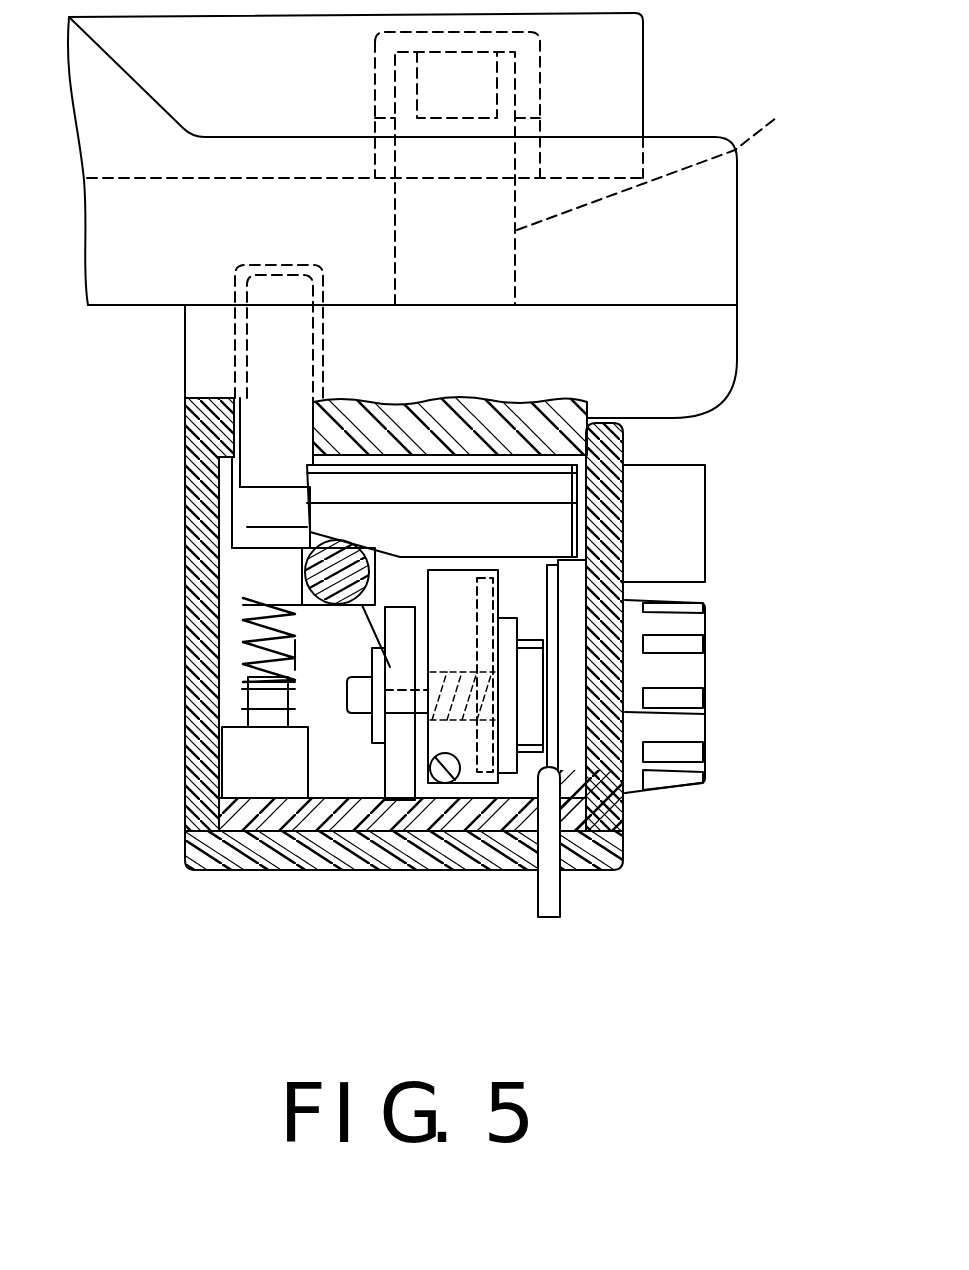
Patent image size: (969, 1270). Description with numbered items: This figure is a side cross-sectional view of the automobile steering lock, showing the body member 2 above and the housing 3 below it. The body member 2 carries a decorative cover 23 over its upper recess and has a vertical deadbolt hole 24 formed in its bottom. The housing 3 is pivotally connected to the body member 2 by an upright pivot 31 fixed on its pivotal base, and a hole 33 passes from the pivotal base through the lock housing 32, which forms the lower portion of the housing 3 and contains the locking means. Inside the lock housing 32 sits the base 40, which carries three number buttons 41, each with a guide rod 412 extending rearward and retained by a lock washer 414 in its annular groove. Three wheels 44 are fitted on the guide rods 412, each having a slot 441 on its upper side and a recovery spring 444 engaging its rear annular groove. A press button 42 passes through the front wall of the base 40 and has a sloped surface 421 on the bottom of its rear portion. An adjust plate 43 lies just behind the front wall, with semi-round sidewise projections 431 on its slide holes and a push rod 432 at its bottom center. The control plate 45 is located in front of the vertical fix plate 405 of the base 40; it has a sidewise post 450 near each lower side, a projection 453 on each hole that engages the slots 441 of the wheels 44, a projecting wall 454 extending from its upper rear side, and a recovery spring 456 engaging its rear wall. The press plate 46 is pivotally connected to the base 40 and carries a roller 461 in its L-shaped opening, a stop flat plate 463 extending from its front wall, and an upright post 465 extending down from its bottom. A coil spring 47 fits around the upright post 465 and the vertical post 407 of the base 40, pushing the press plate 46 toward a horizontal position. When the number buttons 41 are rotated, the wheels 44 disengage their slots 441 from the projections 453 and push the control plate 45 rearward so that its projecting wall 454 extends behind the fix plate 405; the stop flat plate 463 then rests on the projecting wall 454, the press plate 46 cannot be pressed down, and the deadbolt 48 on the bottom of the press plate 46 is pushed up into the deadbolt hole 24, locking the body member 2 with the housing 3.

The body member 2 is at (710, 208).
The housing 3 is at (708, 348).
The decorative cover 23 is at (628, 55).
The deadbolt hole 24 is at (255, 263).
The upright pivot 31 is at (664, 158).
The lock housing 32 is at (200, 857).
The hole 33 is at (235, 352).
The base 40 is at (252, 817).
The number buttons 41 is at (683, 680).
The press button 42 is at (687, 538).
The adjust plate 43 is at (707, 617).
The wheels 44 is at (545, 750).
The control plate 45 is at (473, 793).
The press plate 46 is at (262, 562).
The coil spring 47 is at (258, 607).
The deadbolt 48 is at (262, 430).
The vertical fix plate 405 is at (400, 778).
The vertical post 407 is at (258, 716).
The guide rod 412 is at (650, 748).
The lock washer 414 is at (372, 745).
The sloped surface 421 is at (413, 558).
The semi-round sidewise projections 431 is at (503, 673).
The push rod 432 is at (550, 885).
The slot 441 is at (510, 740).
The recovery spring 444 is at (500, 800).
The sidewise post 450 is at (443, 787).
The projection 453 is at (440, 615).
The projecting wall 454 is at (407, 580).
The recovery spring 456 is at (433, 613).
The roller 461 is at (247, 643).
The stop flat plate 463 is at (308, 527).
The upright post 465 is at (305, 607).